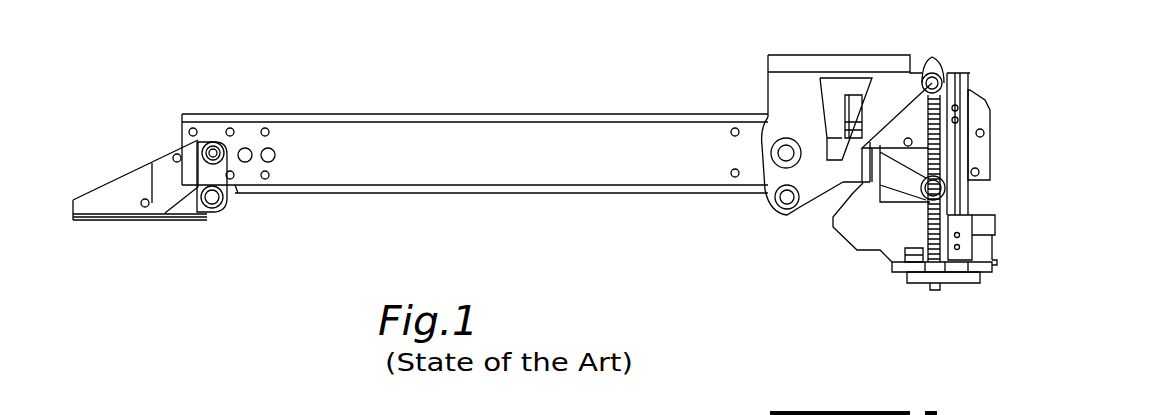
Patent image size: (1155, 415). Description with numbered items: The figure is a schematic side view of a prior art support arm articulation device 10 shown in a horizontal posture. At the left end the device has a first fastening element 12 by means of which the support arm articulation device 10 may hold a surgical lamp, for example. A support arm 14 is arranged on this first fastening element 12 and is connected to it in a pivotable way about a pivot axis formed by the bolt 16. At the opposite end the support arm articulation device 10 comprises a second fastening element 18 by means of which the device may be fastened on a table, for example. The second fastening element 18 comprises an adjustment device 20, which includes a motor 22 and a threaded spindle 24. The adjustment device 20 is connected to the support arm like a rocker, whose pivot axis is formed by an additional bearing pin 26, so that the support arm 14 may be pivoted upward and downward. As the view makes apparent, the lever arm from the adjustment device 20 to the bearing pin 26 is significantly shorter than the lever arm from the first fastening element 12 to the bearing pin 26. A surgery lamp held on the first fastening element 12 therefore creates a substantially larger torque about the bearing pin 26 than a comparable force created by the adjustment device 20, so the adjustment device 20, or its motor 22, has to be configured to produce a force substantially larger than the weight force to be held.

The support arm articulation device 10 is at (1055, 50).
The first fastening element 12 is at (128, 200).
The support arm 14 is at (553, 133).
The bolt 16 is at (212, 153).
The second fastening element 18 is at (1030, 153).
The adjustment device 20 is at (1005, 203).
The motor 22 is at (990, 285).
The threaded spindle 24 is at (940, 125).
The bearing pin 26 is at (783, 153).